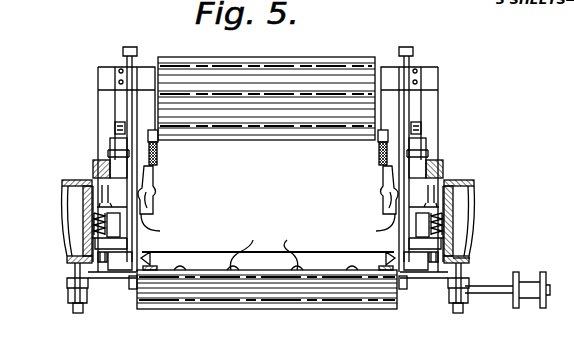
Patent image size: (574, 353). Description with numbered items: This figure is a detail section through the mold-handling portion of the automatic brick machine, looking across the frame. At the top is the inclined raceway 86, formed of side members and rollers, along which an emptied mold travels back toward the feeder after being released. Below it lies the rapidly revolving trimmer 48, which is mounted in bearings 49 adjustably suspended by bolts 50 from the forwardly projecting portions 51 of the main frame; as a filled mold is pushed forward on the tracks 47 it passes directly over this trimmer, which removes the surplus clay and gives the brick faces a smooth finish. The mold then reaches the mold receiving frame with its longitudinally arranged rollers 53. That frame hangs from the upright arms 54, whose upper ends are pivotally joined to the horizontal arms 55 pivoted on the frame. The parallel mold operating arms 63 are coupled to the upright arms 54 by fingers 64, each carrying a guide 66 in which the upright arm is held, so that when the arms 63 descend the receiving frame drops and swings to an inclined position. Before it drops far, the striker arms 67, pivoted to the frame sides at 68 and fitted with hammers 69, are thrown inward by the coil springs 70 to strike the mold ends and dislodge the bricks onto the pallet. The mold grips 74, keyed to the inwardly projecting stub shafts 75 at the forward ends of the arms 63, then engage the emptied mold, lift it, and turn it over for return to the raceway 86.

The tracks 47 is at (152, 267).
The trimmer 48 is at (318, 298).
The bearings 49 is at (72, 298).
The bolts 50 is at (76, 292).
The forwardly projecting portions of the main frame 51 is at (82, 247).
The rollers 53 is at (266, 249).
The upright arms 54 is at (130, 93).
The horizontal arms 55 is at (127, 60).
The mold operating arms 63 is at (93, 165).
The fingers 64 is at (118, 143).
The guide 66 is at (110, 149).
The striker arms 67 is at (462, 254).
The pivot of striker arms 68 is at (108, 222).
The hammers 69 is at (150, 272).
The coil springs 70 is at (90, 206).
The mold grips 74 is at (153, 190).
The stub shafts 75 is at (372, 230).
The inclined raceway 86 is at (280, 105).